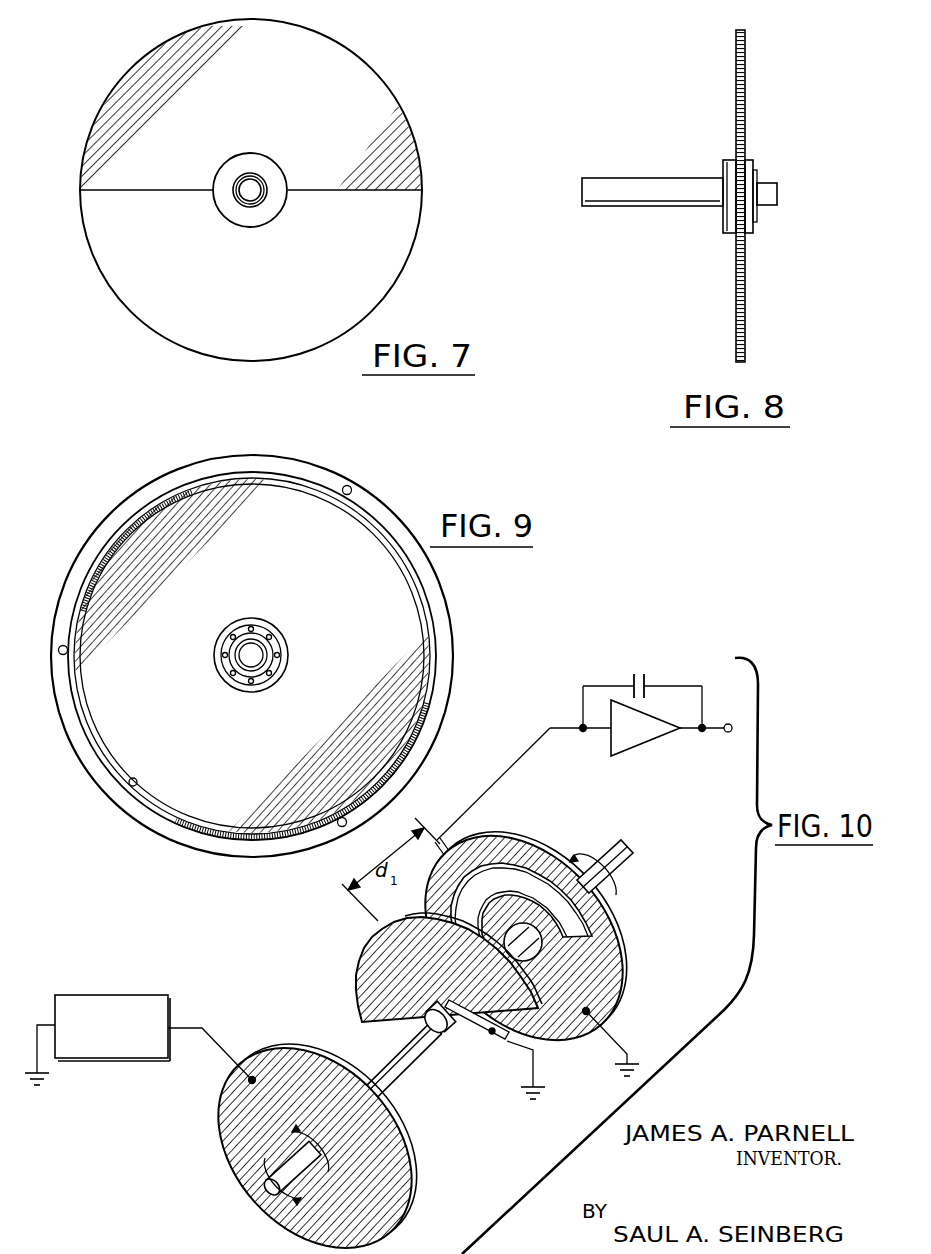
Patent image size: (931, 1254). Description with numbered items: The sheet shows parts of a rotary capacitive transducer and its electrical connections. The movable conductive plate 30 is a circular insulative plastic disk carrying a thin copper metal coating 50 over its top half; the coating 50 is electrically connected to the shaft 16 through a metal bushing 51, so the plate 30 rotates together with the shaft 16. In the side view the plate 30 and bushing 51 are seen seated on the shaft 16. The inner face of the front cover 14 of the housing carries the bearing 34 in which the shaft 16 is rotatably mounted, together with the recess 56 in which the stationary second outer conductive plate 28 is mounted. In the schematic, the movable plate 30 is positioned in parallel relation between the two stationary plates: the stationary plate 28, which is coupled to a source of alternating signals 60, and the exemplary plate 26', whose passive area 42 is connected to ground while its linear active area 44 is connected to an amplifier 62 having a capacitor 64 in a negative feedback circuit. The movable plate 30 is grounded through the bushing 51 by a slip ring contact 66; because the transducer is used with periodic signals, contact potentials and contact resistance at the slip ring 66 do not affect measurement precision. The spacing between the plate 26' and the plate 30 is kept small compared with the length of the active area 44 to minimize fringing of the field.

In FIG. 9, the front cover 14 is at (114, 517).
In FIG. 7, the shaft 16 is at (250, 178).
In FIG. 8, the shaft 16 is at (657, 178).
In FIG. 10, the shaft 16 is at (624, 846).
In FIG. 10, the exemplary plate 26' is at (492, 813).
In FIG. 10, the second outer conductive plate 28 is at (393, 1175).
In FIG. 8, the movable conductive plate 30 is at (738, 31).
In FIG. 10, the movable conductive plate 30 is at (367, 983).
In FIG. 9, the bearing 34 is at (262, 626).
In FIG. 10, the passive area 42 is at (594, 982).
In FIG. 10, the active area 44 is at (586, 928).
In FIG. 7, the copper metal coating 50 is at (280, 110).
In FIG. 8, the copper metal coating 50 is at (748, 113).
In FIG. 7, the metal bushing 51 is at (246, 228).
In FIG. 8, the metal bushing 51 is at (752, 165).
In FIG. 10, the metal bushing 51 is at (453, 1040).
In FIG. 9, the recess 56 is at (127, 786).
In FIG. 10, the source of alternating signals 60 is at (140, 1061).
In FIG. 10, the amplifier 62 is at (661, 744).
In FIG. 10, the capacitor 64 is at (641, 674).
In FIG. 10, the slip ring contact 66 is at (492, 1034).